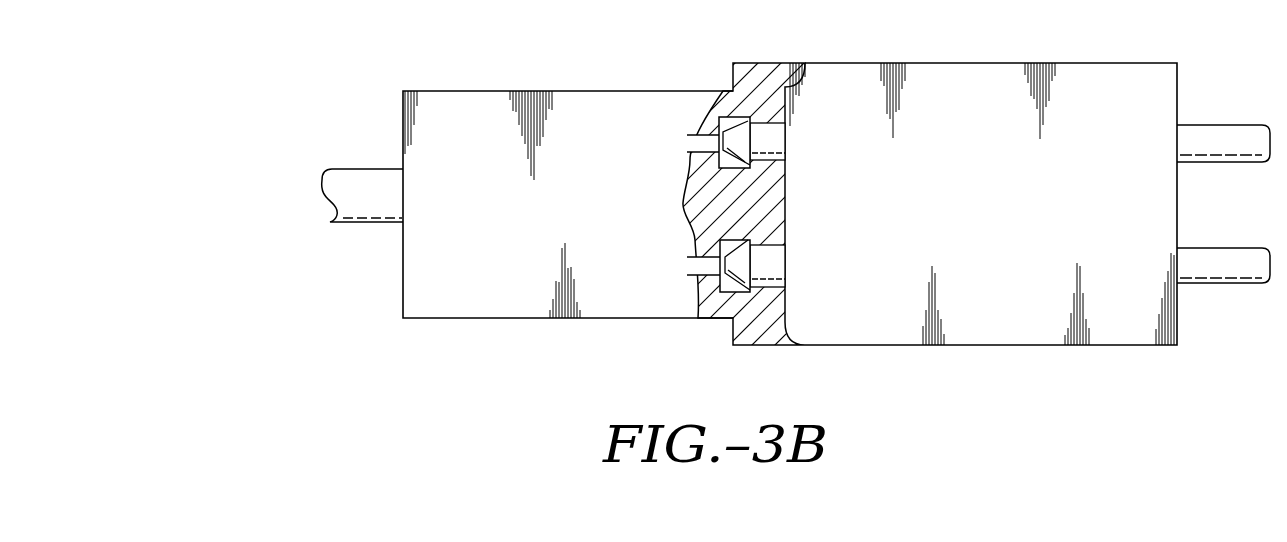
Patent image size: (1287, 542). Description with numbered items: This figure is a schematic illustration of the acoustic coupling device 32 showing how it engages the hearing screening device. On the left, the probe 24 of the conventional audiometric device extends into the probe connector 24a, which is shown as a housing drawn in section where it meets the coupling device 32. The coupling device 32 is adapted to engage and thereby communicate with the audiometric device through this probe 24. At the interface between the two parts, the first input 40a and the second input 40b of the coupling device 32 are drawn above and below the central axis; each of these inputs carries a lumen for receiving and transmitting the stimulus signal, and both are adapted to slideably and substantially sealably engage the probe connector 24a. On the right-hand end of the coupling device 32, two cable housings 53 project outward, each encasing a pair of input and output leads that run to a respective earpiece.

The probe 24 is at (367, 227).
The probe connector 24a is at (601, 90).
The acoustic coupling device 32 is at (953, 63).
The first input 40a is at (738, 136).
The second input 40b is at (736, 266).
The cable housing 53 is at (1218, 123).